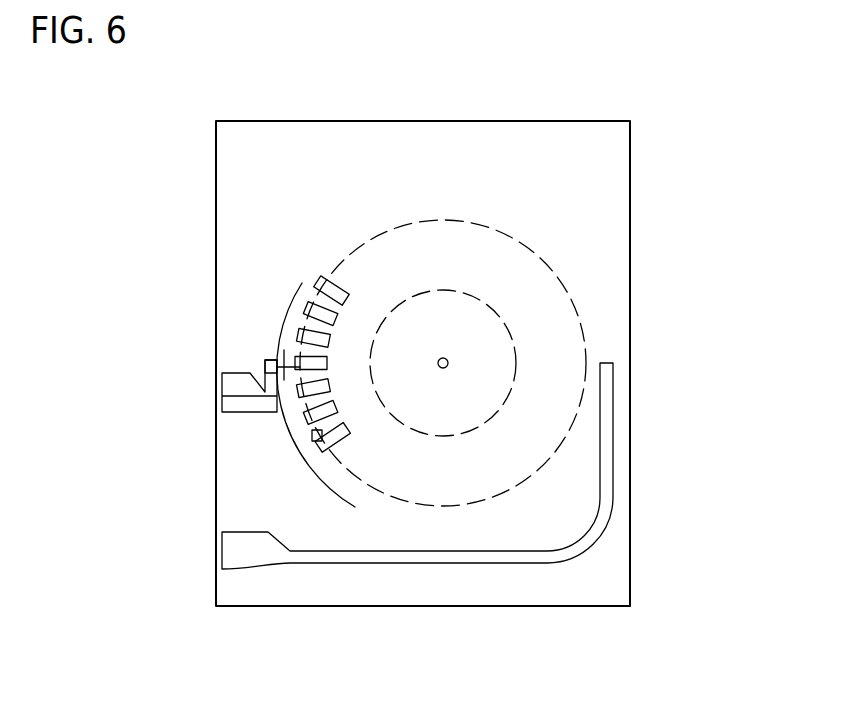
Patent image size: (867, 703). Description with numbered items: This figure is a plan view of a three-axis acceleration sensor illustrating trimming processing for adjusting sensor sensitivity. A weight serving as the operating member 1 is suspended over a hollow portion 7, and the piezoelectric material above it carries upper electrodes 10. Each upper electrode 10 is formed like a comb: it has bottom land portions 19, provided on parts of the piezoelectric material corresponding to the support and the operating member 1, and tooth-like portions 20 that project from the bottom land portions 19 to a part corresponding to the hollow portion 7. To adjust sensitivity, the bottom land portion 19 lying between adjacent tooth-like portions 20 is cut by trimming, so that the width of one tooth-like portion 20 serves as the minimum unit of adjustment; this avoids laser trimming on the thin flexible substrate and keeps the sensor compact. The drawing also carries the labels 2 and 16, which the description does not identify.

The operating member 1 is at (498, 377).
The housing 2 is at (577, 121).
The hollow portion 7 is at (540, 283).
The upper electrodes 10 is at (213, 391).
The flexible printed circuit 16 is at (351, 470).
The bottom land portions 19 is at (300, 418).
The tooth-like portions 20 is at (277, 394).